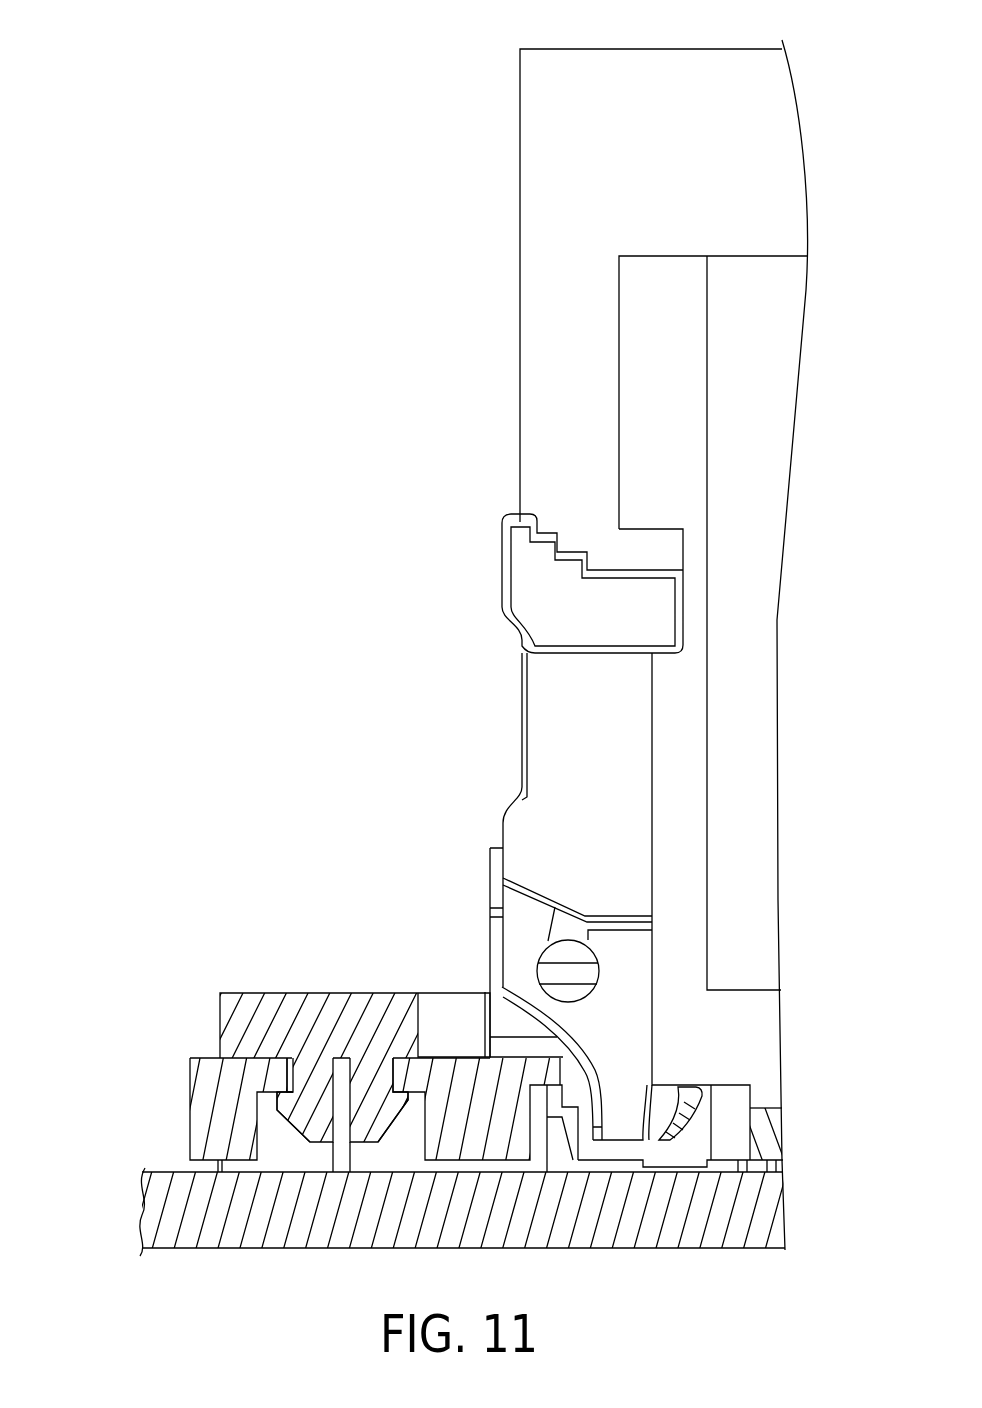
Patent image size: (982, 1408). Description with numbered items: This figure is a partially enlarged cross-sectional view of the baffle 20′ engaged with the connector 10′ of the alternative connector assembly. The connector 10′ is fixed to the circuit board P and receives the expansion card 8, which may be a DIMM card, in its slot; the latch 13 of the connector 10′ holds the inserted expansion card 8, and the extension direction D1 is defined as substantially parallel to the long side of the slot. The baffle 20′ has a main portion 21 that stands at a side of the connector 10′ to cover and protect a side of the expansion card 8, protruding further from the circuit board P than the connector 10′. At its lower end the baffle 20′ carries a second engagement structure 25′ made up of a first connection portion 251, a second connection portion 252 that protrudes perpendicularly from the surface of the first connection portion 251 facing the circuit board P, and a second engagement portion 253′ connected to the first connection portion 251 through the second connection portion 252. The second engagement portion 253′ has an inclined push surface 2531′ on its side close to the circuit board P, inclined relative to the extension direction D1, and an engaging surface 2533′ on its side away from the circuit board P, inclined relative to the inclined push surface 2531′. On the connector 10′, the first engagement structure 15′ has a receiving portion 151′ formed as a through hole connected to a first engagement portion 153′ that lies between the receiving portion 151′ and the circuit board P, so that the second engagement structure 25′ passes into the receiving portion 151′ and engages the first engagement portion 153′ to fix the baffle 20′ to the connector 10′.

The extension direction D1 is at (442, 31).
The connector 10′ is at (797, 1037).
The main portion 21 is at (561, 170).
The expansion card 8 is at (757, 282).
The latch 13 is at (525, 580).
The baffle 20′ is at (212, 955).
The second engagement structure 25′ is at (98, 983).
The first connection portion 251 is at (297, 989).
The second engagement portion 253′ is at (314, 1146).
The engaging surface 2533′ is at (395, 1088).
The second connection portion 252 is at (370, 1078).
The inclined push surface 2531′ is at (416, 1106).
The first engagement structure 15′ is at (183, 1113).
The receiving portion 151′ is at (299, 1066).
The first engagement portion 153′ is at (397, 1127).
The circuit board P is at (222, 1233).